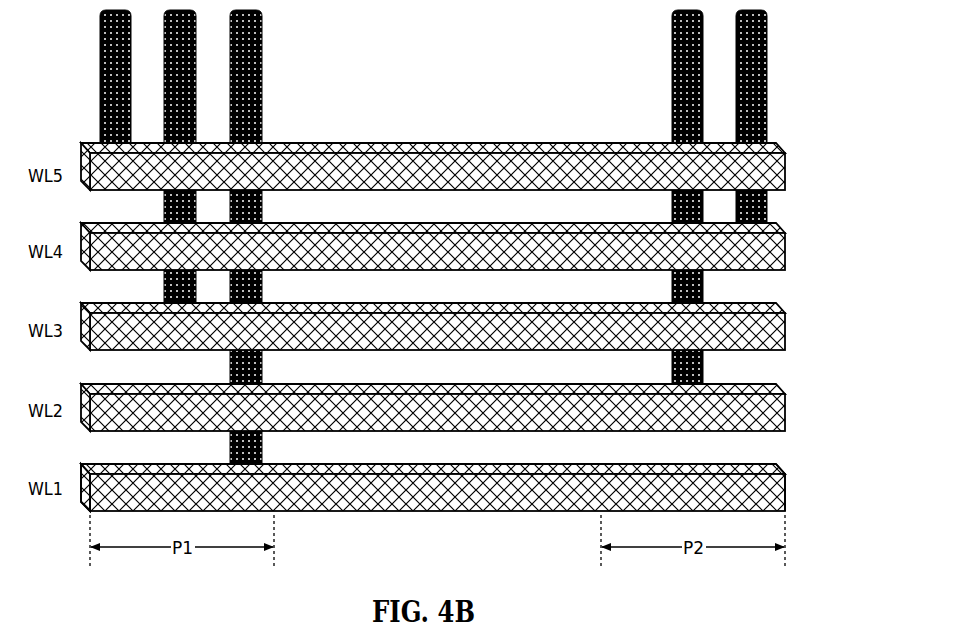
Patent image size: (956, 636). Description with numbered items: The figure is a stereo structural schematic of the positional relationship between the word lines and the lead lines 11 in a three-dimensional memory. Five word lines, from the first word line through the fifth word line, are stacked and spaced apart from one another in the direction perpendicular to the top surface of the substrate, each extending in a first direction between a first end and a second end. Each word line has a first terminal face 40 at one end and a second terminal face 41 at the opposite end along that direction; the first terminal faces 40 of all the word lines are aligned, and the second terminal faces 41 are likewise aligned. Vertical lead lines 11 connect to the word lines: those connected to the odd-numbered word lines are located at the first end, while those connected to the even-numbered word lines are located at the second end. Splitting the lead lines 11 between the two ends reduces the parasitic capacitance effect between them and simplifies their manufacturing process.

The lead line 11 is at (673, 38).
The first terminal face 40 is at (87, 506).
The second terminal face 41 is at (786, 489).